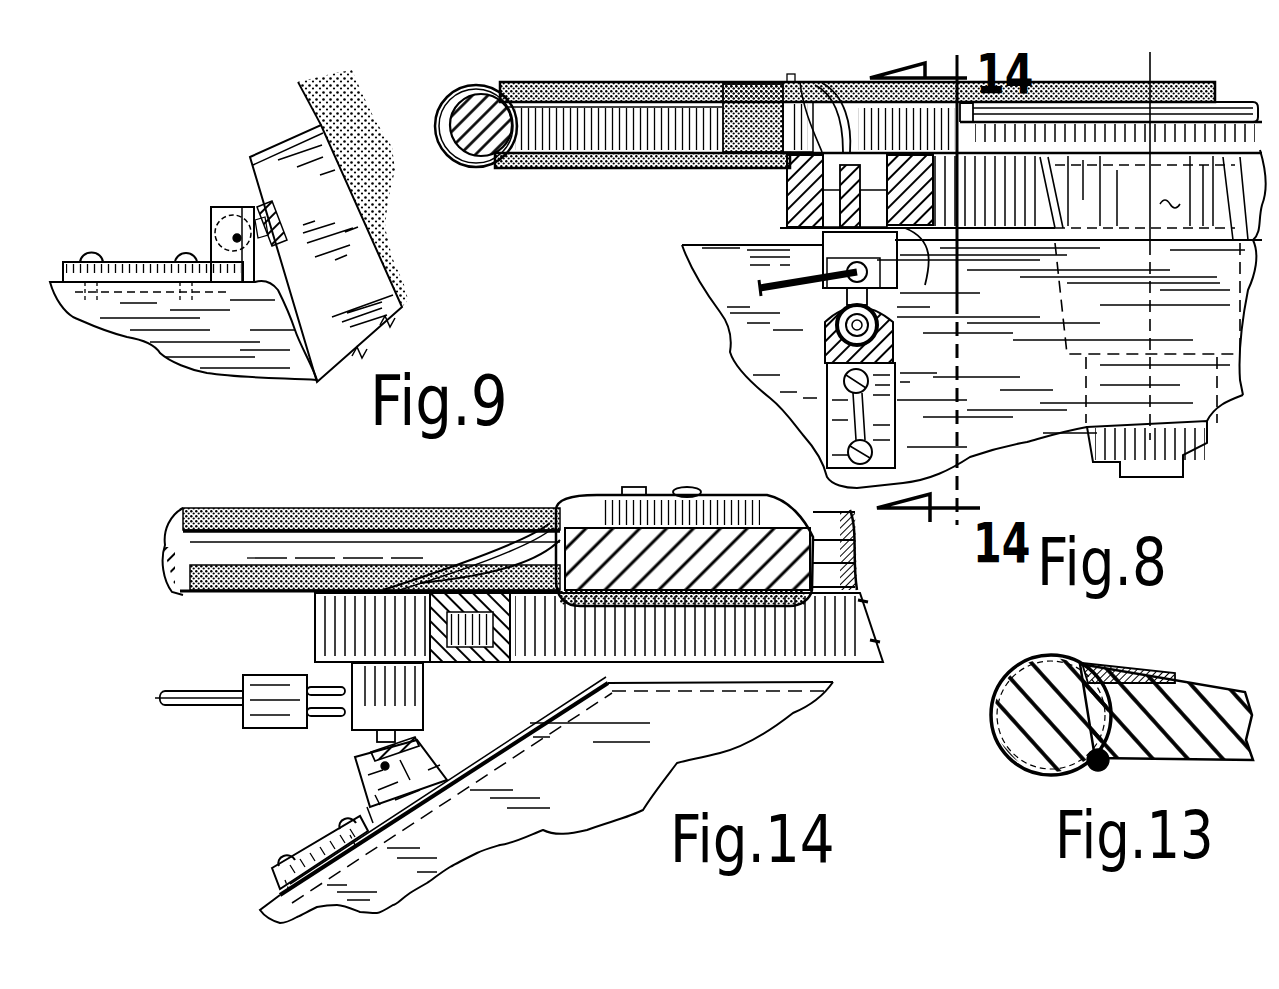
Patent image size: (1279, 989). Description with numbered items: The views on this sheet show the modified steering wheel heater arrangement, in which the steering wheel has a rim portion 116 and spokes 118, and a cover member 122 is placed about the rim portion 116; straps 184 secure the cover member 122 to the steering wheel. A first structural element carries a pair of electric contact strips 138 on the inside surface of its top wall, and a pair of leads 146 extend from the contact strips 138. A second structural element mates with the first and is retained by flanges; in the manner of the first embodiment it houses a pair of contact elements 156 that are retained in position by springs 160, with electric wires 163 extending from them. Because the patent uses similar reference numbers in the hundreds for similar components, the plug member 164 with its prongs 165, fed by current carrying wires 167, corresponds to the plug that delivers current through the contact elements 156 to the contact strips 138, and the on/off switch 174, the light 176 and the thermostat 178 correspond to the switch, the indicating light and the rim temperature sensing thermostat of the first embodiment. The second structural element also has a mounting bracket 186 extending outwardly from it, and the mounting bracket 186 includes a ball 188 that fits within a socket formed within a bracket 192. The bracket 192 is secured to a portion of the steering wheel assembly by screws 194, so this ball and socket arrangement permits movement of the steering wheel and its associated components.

In FIG. 8, the rim portion 116 is at (492, 168).
In FIG. 13, the rim portion 116 is at (1028, 712).
In FIG. 8, the spokes 118 is at (534, 169).
In FIG. 14, the spokes 118 is at (860, 560).
In FIG. 13, the spokes 118 is at (1195, 688).
In FIG. 8, the cover member 122 is at (452, 167).
In FIG. 14, the cover member 122 is at (450, 508).
In FIG. 8, the electric contact strips 138 is at (790, 172).
In FIG. 14, the electric contact strips 138 is at (455, 663).
In FIG. 8, the leads 146 is at (845, 86).
In FIG. 14, the leads 146 is at (548, 527).
In FIG. 8, the contact elements 156 is at (926, 269).
In FIG. 8, the springs 160 is at (787, 207).
In FIG. 8, the electric wires 163 is at (788, 214).
In FIG. 14, the connector body 164 is at (247, 723).
In FIG. 14, the connector pins 165 is at (320, 722).
In FIG. 14, the cable 167 is at (193, 706).
In FIG. 14, the terminal 174 is at (637, 487).
In FIG. 14, the terminal 176 is at (687, 487).
In FIG. 13, the strip 178 is at (1150, 667).
In FIG. 14, the straps 184 is at (785, 603).
In FIG. 14, the mounting brackets 186 is at (423, 722).
In FIG. 8, the ball 188 is at (827, 308).
In FIG. 9, the ball 188 is at (222, 217).
In FIG. 14, the ball 188 is at (375, 748).
In FIG. 8, the bracket 192 is at (827, 368).
In FIG. 9, the bracket 192 is at (155, 262).
In FIG. 14, the bracket 192 is at (420, 747).
In FIG. 8, the screws 194 is at (853, 393).
In FIG. 14, the screws 194 is at (280, 862).